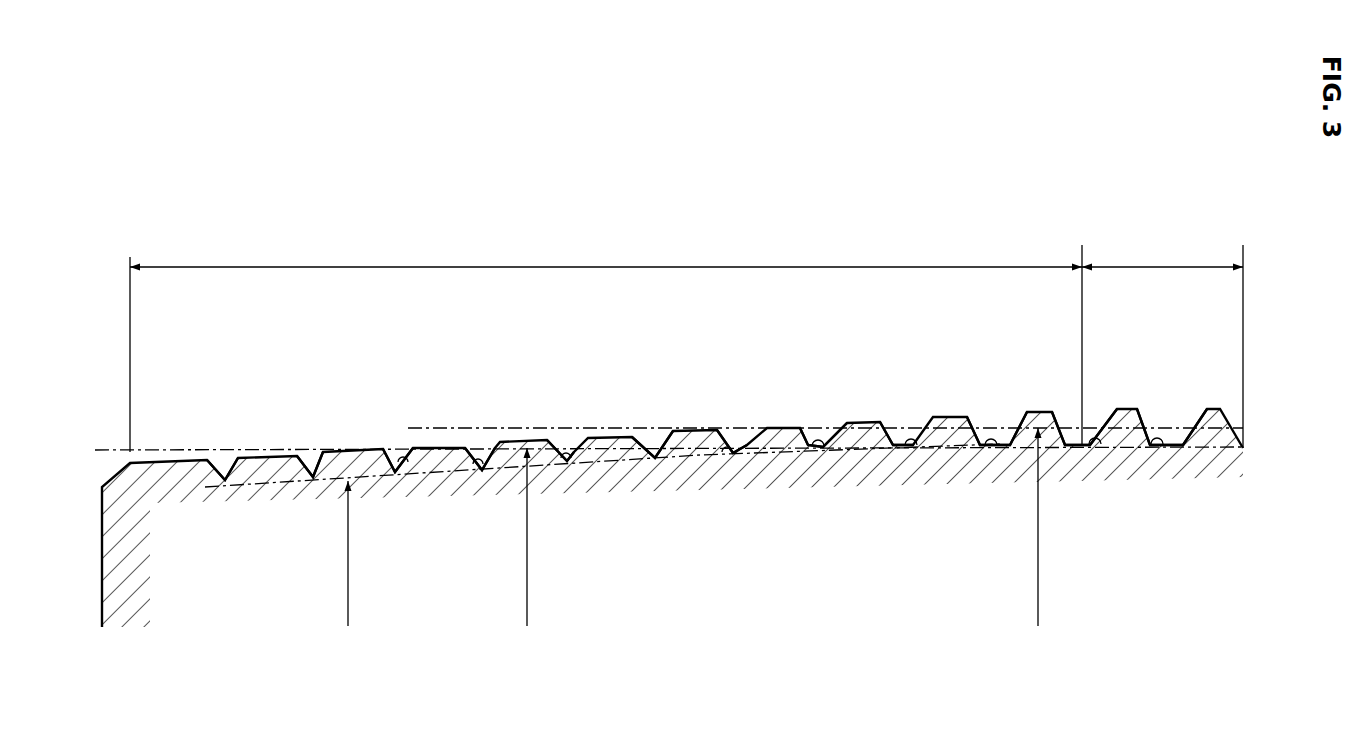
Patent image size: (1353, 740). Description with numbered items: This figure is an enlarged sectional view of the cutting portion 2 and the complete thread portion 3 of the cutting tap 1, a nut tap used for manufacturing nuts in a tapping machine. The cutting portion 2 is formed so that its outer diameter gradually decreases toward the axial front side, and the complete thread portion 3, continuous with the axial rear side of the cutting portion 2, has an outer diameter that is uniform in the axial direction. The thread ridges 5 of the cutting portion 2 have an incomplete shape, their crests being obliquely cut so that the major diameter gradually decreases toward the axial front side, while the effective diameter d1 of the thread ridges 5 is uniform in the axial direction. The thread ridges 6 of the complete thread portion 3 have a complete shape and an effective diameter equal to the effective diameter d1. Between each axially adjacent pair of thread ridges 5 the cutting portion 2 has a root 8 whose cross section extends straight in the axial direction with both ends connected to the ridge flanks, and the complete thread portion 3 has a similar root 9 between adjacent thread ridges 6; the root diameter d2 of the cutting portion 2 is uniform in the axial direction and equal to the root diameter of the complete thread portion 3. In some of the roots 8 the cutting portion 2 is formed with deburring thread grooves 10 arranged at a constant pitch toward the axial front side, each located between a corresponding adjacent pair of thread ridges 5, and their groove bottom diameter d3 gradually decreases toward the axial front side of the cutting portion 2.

The cutting tap 1 is at (107, 478).
The cutting portion 2 is at (606, 343).
The complete thread portion 3 is at (1162, 342).
The thread ridges 5 is at (510, 441).
The thread ridges 6 is at (1207, 408).
The root 8 is at (560, 438).
The root 9 is at (1143, 447).
The deburring thread grooves 10 is at (296, 460).
The effective diameter d1 is at (1038, 603).
The root diameter d2 is at (527, 603).
The groove bottom diameter d3 is at (348, 603).